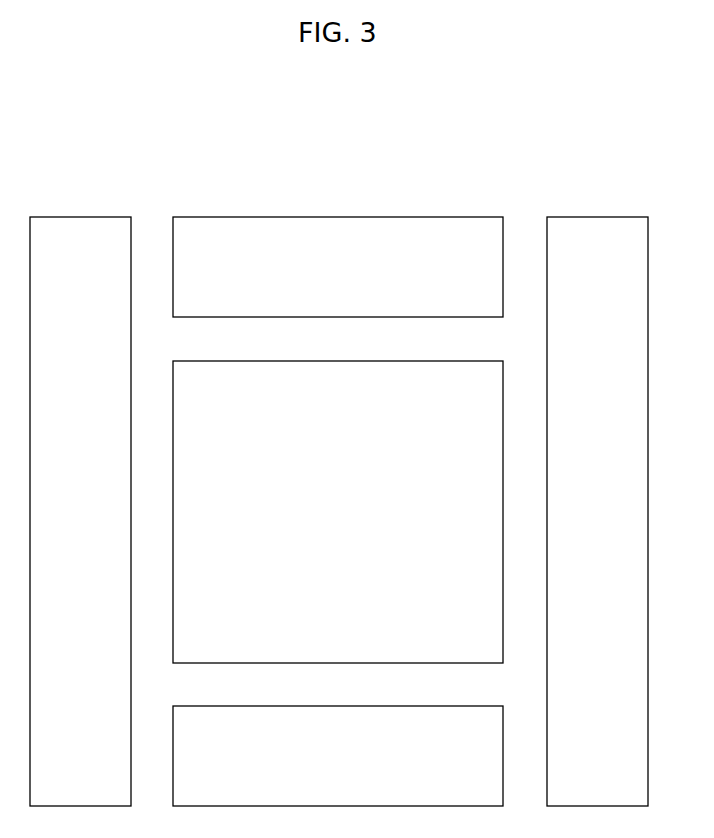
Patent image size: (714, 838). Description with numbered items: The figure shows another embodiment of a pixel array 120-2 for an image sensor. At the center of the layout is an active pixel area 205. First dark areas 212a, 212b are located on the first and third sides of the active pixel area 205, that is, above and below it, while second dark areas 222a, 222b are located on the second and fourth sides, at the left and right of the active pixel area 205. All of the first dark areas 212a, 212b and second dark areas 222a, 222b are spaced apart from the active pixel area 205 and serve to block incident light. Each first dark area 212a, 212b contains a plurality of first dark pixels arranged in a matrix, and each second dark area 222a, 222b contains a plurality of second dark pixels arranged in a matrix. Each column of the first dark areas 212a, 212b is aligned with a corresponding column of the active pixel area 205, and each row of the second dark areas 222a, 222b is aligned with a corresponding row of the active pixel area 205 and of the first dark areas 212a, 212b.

The pixel array 120-2 is at (596, 156).
The active pixel area 205 is at (472, 649).
The first dark area 212a is at (353, 290).
The first dark area 212b is at (353, 780).
The second dark area 222a is at (98, 355).
The second dark area 222b is at (613, 355).